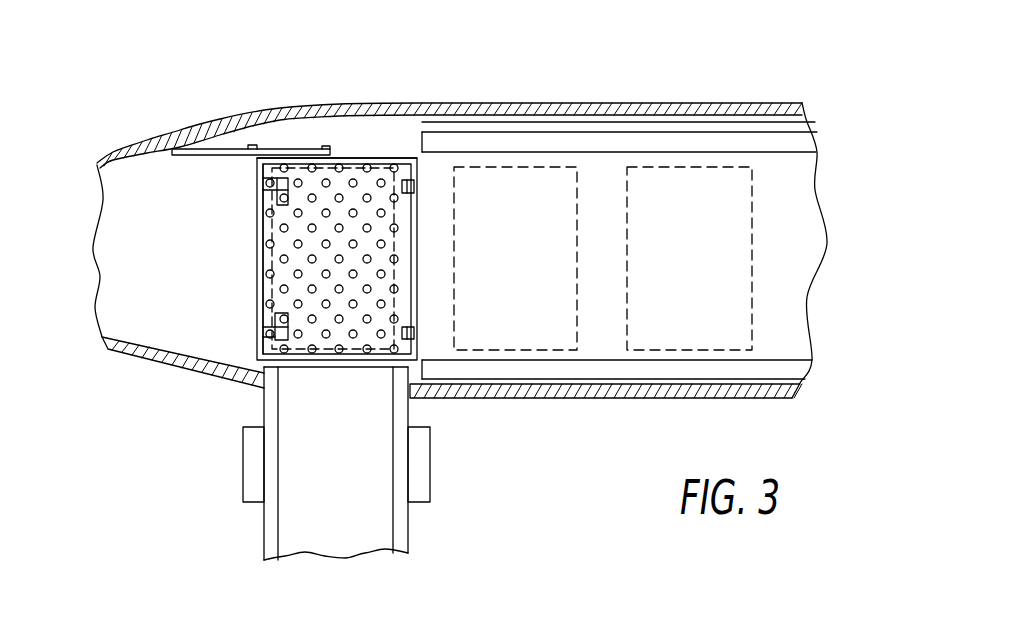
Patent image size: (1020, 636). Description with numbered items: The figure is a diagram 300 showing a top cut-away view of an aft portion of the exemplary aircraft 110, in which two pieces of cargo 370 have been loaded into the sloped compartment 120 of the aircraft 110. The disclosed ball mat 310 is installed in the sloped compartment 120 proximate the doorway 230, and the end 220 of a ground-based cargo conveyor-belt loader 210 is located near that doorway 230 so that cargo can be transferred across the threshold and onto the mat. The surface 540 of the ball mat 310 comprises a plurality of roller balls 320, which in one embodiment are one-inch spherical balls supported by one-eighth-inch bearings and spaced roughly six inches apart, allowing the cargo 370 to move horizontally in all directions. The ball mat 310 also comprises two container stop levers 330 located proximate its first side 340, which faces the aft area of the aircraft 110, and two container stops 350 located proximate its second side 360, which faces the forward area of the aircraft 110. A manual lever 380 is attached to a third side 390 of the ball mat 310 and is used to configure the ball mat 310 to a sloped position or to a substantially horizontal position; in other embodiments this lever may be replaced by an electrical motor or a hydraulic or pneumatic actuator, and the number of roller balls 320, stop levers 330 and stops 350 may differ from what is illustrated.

The aircraft 110 is at (511, 78).
The sloped compartment 120 is at (205, 179).
The ground-based cargo conveyor-belt loader 210 is at (302, 515).
The end of ground-based cargo conveyor-belt loader 220 is at (332, 378).
The doorway 230 is at (377, 368).
The diagram 300 is at (562, 534).
The ball mat 310 is at (277, 247).
The roller balls 320 is at (367, 193).
The container stop levers 330 is at (283, 165).
The first side 340 is at (257, 215).
The container stops 350 is at (407, 179).
The second side 360 is at (418, 265).
The cargo 370 is at (536, 166).
The manual lever 380 is at (210, 149).
The third side 390 is at (393, 157).
The surface 540 is at (275, 287).